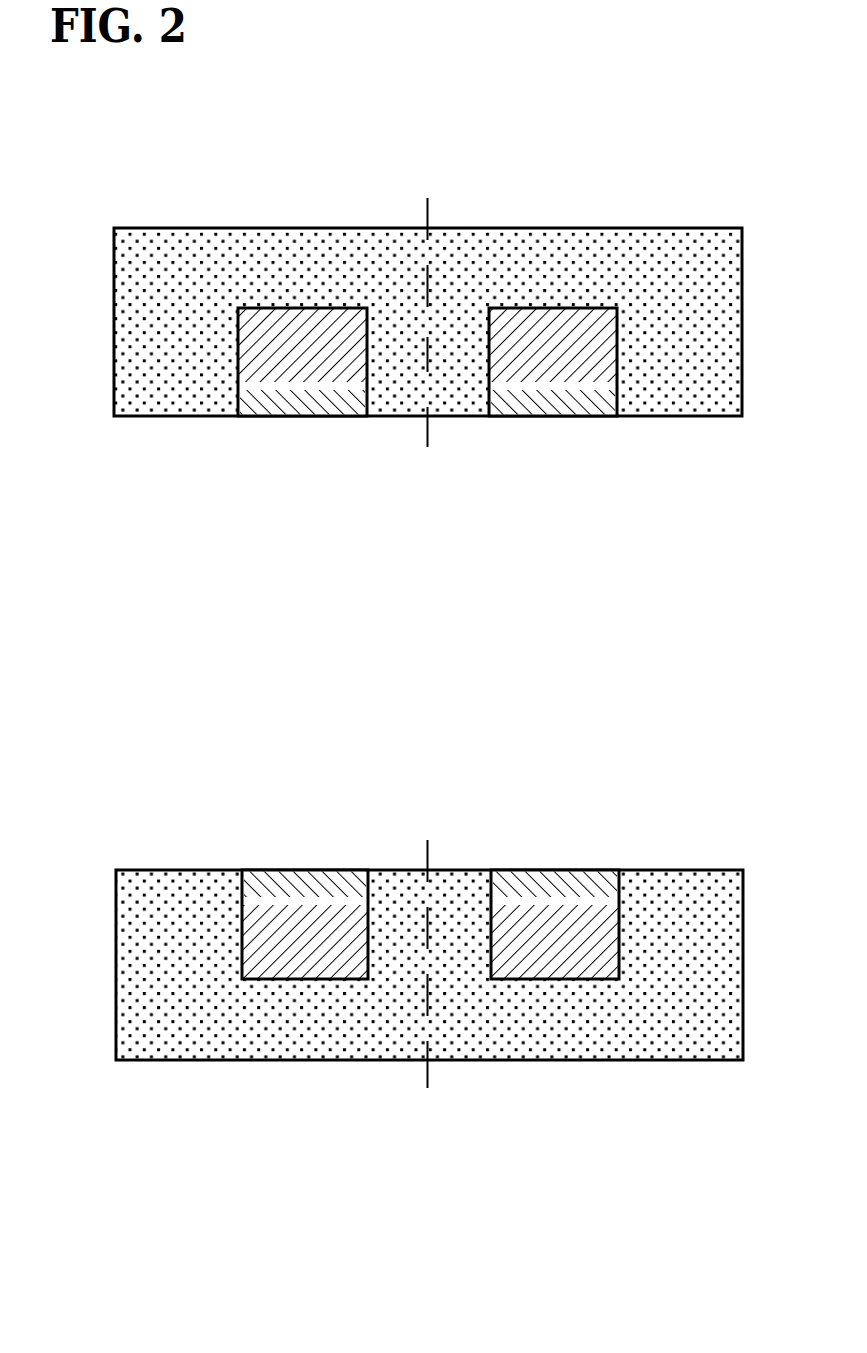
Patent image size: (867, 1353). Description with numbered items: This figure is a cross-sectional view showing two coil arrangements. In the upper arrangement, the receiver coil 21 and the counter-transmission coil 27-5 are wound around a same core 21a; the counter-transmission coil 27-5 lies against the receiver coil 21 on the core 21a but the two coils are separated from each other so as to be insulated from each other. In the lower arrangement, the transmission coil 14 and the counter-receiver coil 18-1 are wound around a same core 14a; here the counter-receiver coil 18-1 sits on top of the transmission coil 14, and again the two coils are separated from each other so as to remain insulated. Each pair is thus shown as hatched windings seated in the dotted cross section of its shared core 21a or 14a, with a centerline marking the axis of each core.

The receiver coil 21 is at (543, 350).
The core 21a is at (405, 380).
The counter-transmission coil 27-5 is at (277, 408).
The transmission coil 14 is at (557, 967).
The core 14a is at (405, 965).
The counter-receiver coil 18-1 is at (593, 883).